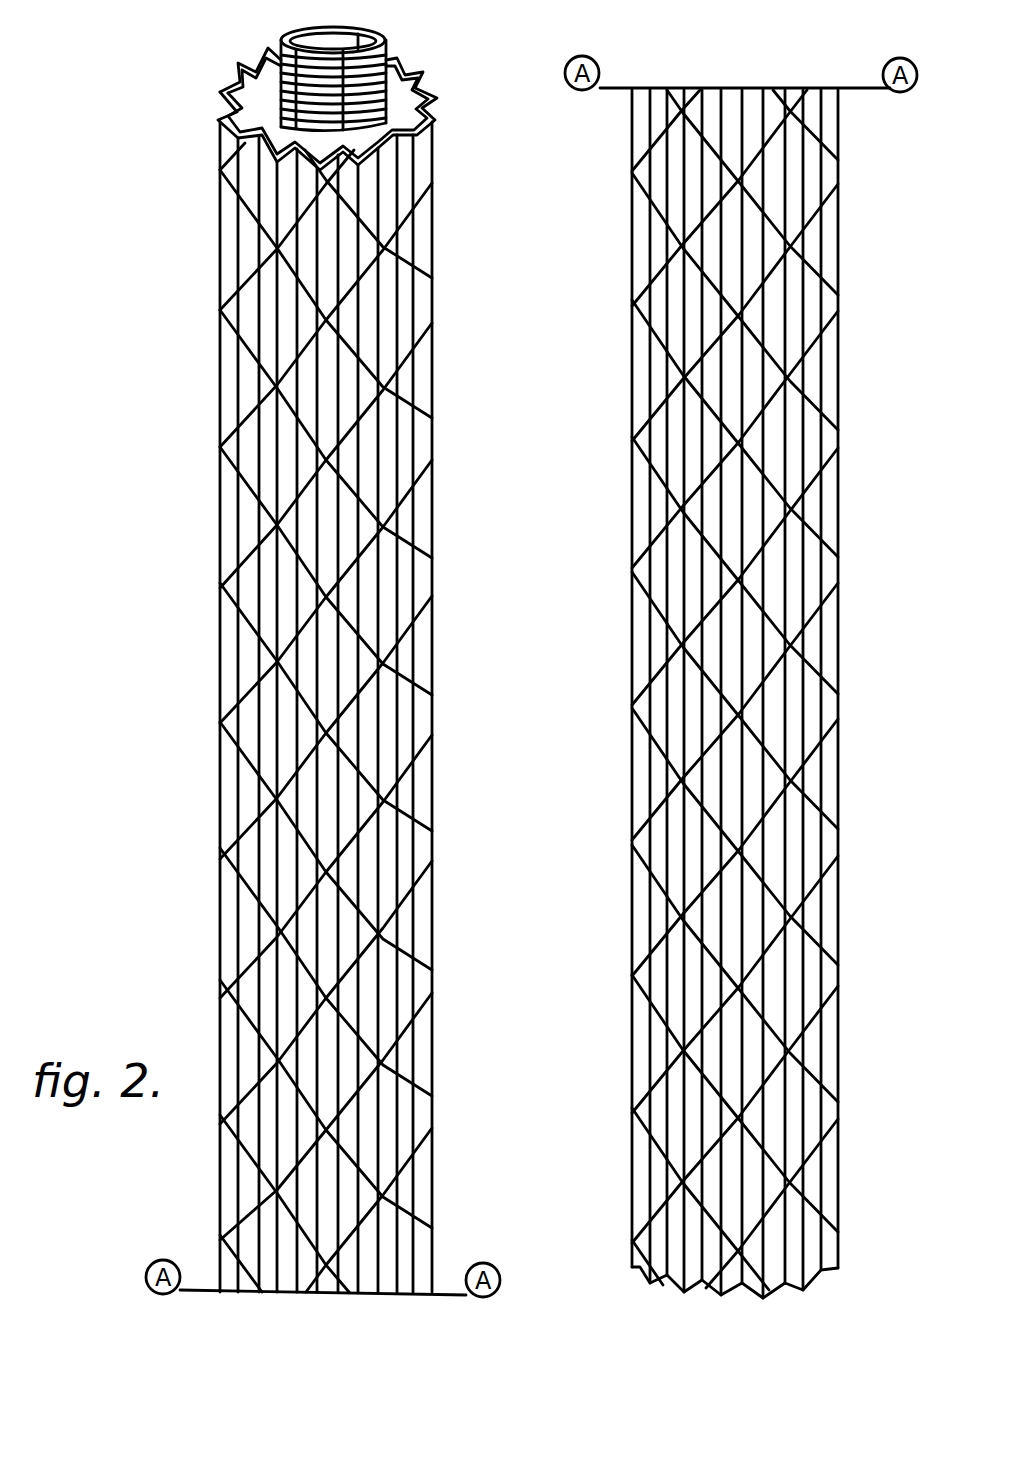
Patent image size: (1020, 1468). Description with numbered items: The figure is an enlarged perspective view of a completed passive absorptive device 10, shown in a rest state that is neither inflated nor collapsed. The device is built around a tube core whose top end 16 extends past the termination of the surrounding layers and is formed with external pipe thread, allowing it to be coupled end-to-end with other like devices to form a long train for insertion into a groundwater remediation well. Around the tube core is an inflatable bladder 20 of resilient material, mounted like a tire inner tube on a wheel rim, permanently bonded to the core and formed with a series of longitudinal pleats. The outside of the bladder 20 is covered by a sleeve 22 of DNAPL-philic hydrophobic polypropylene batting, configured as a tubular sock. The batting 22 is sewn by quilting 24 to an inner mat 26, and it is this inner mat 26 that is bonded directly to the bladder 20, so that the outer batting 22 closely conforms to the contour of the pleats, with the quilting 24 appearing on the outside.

The passive absorptive device 10 is at (152, 412).
The top end with external pipe thread 16 is at (281, 46).
The inflatable bladder 20 is at (365, 137).
The sleeve of DNAPL-philic hydrophobic batting 22 is at (422, 173).
The quilting 24 is at (397, 237).
The inner mat 26 is at (648, 788).